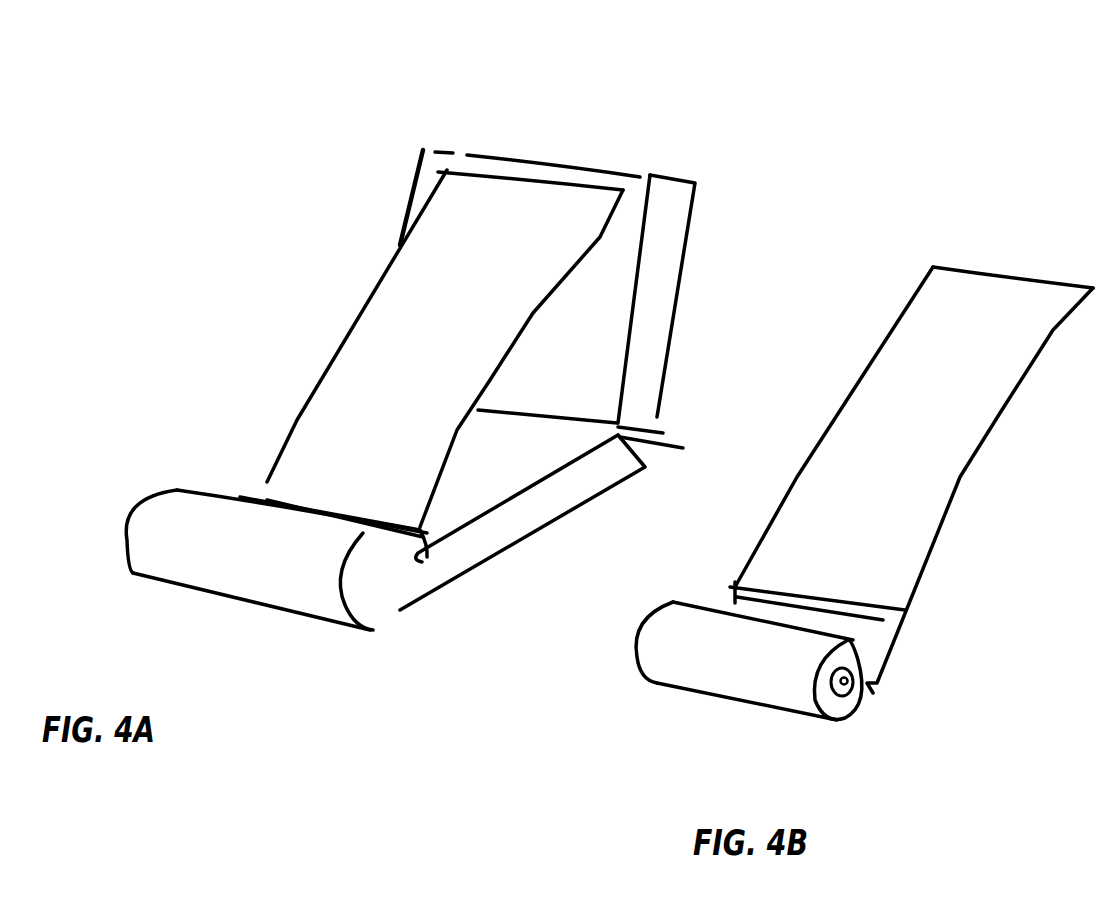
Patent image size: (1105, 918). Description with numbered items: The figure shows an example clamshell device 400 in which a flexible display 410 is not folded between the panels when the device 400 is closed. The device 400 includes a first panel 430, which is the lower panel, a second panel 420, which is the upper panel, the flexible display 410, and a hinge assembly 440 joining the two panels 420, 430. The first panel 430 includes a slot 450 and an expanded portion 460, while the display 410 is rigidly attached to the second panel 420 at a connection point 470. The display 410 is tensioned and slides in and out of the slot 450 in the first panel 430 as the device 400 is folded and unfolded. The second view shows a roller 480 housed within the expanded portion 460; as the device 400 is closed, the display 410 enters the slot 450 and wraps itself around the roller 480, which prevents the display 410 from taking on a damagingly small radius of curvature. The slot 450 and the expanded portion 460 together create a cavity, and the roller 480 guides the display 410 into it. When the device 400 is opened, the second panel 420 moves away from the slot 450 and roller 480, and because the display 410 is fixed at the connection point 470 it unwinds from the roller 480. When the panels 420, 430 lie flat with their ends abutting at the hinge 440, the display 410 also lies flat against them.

In FIG. 4A, the clamshell device 400 is at (258, 181).
In FIG. 4A, the flexible display 410 is at (333, 353).
In FIG. 4B, the flexible display 410 is at (953, 493).
In FIG. 4A, the second panel 420 is at (683, 257).
In FIG. 4A, the first panel 430 is at (443, 587).
In FIG. 4A, the hinge assembly 440 is at (680, 443).
In FIG. 4A, the slot 450 is at (267, 490).
In FIG. 4B, the slot 450 is at (910, 613).
In FIG. 4A, the expanded portion 460 is at (243, 550).
In FIG. 4A, the connection point 470 is at (550, 180).
In FIG. 4B, the connection point 470 is at (1007, 280).
In FIG. 4B, the roller 480 is at (853, 683).